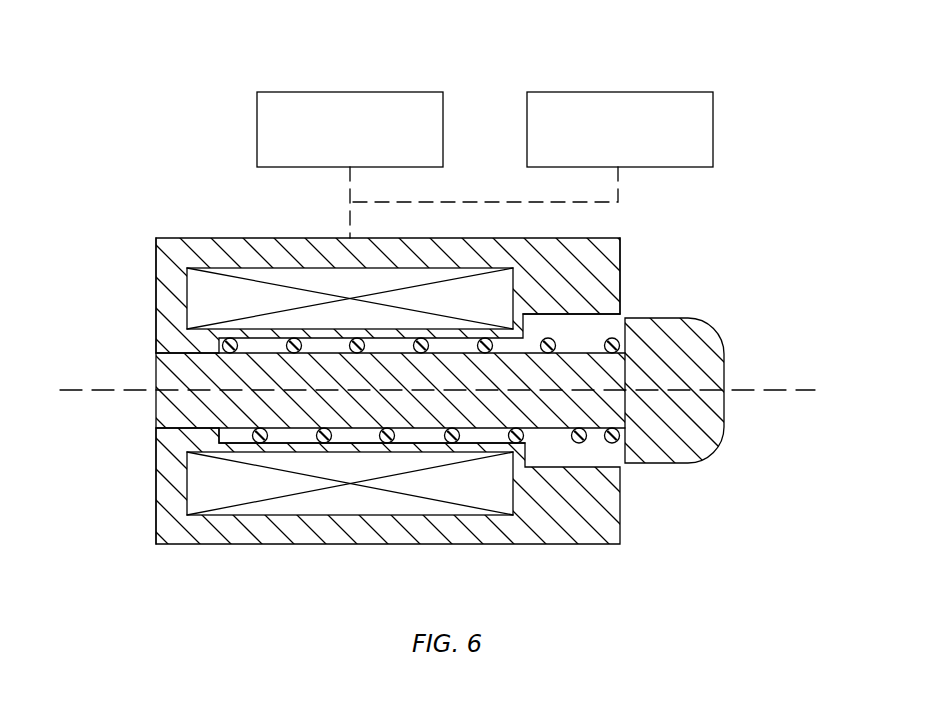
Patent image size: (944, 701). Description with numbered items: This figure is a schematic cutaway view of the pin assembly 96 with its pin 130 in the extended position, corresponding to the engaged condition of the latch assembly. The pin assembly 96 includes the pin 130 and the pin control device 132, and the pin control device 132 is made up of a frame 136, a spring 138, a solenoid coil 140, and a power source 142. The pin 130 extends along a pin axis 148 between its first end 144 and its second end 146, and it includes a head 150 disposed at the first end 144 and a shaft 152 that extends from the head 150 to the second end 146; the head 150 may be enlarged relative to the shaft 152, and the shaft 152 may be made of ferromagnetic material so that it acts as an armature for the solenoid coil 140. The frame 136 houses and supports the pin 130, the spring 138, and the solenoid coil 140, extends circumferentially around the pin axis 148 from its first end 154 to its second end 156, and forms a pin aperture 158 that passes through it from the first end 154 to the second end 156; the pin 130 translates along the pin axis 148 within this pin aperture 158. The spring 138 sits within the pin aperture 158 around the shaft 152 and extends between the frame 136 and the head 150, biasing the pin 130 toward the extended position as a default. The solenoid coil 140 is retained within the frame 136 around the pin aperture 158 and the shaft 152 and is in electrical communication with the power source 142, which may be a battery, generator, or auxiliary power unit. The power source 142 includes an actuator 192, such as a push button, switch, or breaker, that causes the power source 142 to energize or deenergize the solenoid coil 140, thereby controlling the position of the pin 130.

The pin assembly 96 is at (728, 190).
The pin 130 is at (715, 307).
The pin control device 132 is at (192, 227).
The frame 136 is at (225, 257).
The spring 138 is at (578, 438).
The solenoid coil 140 is at (480, 487).
The power source 142 is at (330, 92).
The first end 144 is at (723, 413).
The second end 146 is at (156, 412).
The pin axis 148 is at (805, 390).
The head 150 is at (713, 358).
The shaft 152 is at (197, 412).
The first end 154 is at (620, 267).
The second end 156 is at (156, 290).
The pin aperture 158 is at (428, 437).
The actuator 192 is at (597, 92).